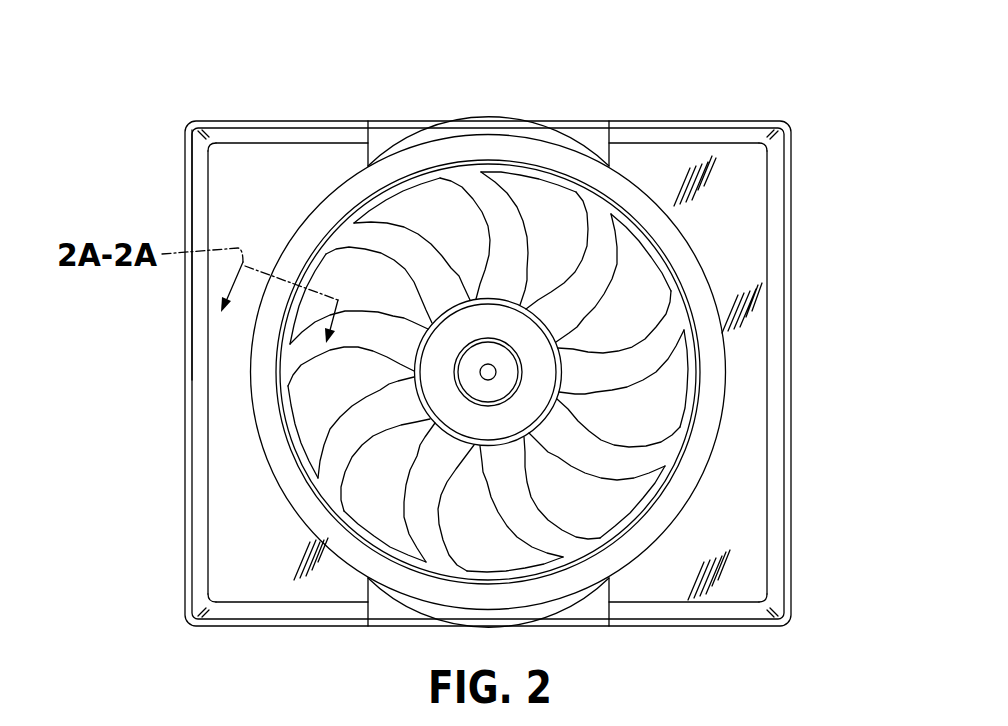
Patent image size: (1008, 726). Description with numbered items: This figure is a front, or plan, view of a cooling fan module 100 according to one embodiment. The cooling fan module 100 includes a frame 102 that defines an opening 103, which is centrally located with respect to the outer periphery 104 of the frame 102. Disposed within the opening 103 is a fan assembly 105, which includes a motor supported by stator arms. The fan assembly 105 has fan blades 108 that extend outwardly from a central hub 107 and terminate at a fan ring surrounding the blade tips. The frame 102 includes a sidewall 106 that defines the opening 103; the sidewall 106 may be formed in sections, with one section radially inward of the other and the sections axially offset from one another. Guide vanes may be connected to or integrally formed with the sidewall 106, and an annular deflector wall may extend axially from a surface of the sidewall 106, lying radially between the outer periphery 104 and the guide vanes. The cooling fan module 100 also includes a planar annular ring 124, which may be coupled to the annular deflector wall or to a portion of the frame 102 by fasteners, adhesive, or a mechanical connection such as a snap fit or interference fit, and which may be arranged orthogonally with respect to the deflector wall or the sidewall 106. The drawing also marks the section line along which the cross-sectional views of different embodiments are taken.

The cooling fan module 100 is at (752, 87).
The frame 102 is at (176, 209).
The opening 103 is at (313, 403).
The outer periphery 104 is at (192, 380).
The fan assembly 105 is at (612, 378).
The sidewall 106 is at (237, 560).
The hub 107 is at (485, 355).
The fan blades 108 is at (594, 220).
The planar annular ring 124 is at (710, 385).